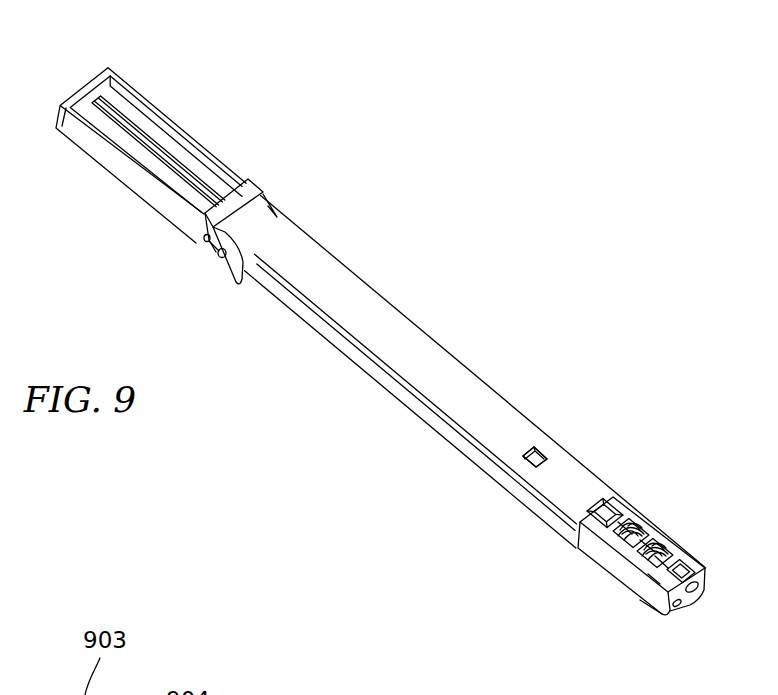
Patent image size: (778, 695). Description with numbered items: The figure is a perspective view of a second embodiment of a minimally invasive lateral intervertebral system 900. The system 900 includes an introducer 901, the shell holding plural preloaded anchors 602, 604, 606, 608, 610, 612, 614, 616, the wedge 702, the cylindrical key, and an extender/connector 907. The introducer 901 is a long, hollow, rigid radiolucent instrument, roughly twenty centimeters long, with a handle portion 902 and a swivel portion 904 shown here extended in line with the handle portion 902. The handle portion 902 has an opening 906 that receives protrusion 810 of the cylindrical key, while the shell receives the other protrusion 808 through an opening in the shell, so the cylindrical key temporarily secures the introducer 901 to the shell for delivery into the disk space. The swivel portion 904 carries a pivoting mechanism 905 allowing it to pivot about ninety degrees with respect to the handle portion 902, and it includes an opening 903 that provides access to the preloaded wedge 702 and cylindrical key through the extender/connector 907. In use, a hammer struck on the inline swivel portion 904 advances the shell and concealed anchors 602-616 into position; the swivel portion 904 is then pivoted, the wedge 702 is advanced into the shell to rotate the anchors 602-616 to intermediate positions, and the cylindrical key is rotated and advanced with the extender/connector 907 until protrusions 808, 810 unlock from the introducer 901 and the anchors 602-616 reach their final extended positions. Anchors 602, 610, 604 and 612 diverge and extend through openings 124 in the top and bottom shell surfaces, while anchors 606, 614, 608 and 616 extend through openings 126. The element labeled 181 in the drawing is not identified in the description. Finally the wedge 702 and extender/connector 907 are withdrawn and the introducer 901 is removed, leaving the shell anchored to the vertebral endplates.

The minimally invasive lateral intervertebral system 900 is at (474, 234).
The introducer 901 is at (362, 400).
The handle portion 902 is at (340, 348).
The opening 903 is at (121, 91).
The swivel portion 904 is at (160, 103).
The pivoting mechanism 905 is at (203, 257).
The opening 906 is at (538, 444).
The extender/connector 907 is at (168, 157).
The wedge 702 is at (145, 157).
The protrusion 808 is at (610, 506).
The protrusion 810 is at (520, 458).
The anchor 610 is at (630, 520).
The anchor 612 is at (643, 530).
The anchor 614 is at (667, 548).
The anchor 616 is at (664, 543).
The anchor 602 is at (607, 540).
The anchor 604 is at (633, 550).
The anchor 606 is at (660, 560).
The anchor 608 is at (653, 580).
The openings 124 is at (590, 532).
The openings 126 is at (680, 583).
The block tip 181 is at (657, 622).